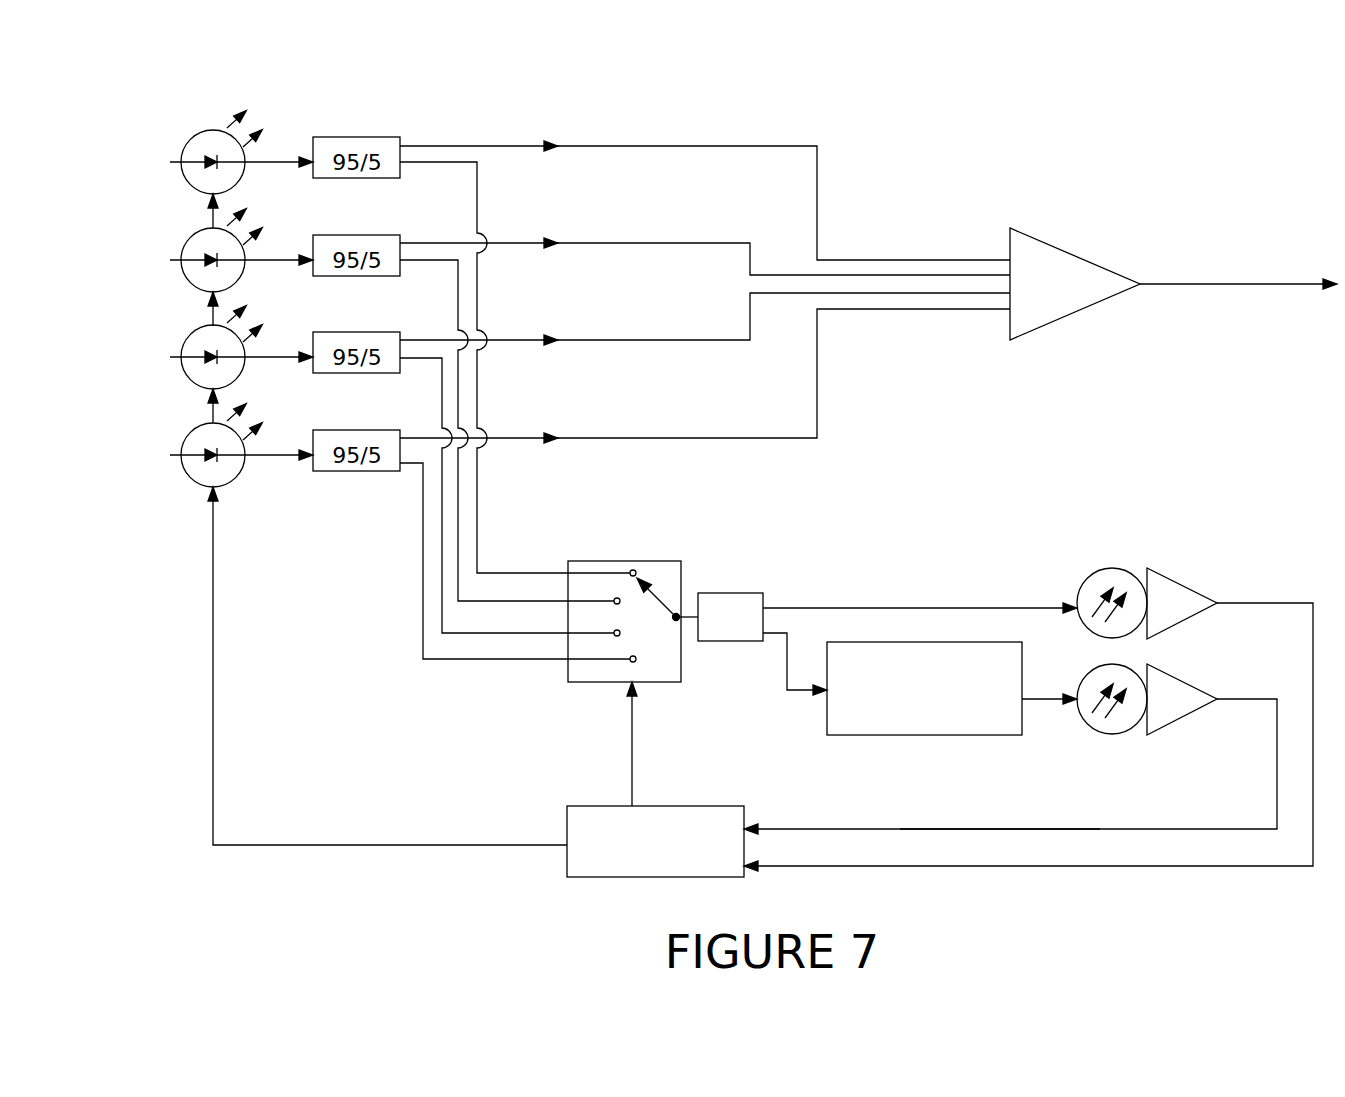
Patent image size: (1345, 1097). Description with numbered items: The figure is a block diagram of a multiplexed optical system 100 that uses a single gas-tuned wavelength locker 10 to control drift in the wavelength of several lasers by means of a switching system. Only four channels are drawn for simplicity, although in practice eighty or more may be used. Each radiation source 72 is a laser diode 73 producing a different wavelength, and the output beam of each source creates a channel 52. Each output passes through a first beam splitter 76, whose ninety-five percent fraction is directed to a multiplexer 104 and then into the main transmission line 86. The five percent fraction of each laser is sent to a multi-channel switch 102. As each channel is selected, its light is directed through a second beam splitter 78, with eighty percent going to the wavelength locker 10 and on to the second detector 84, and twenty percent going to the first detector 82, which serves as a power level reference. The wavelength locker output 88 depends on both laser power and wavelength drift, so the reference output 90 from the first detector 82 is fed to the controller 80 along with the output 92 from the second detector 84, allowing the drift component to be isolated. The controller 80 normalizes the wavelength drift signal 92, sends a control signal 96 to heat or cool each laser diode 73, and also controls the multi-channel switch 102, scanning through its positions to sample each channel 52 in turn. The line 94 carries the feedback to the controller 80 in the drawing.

The multiplexed optical system 100 is at (1087, 195).
The radiation source 72 is at (225, 336).
The laser diode 73 is at (205, 472).
The first beam splitter 76 is at (388, 465).
The channel 52 is at (950, 312).
The multiplexer 104 is at (1045, 318).
The main transmission line 86 is at (1150, 286).
The multi-channel switch 102 is at (648, 560).
The second beam splitter 78 is at (721, 593).
The gas-tuned wavelength locker 10 is at (924, 688).
The wavelength locker output 88 is at (1037, 699).
The first detector 82 is at (1167, 592).
The second detector 84 is at (1158, 717).
The reference output 90 is at (1283, 603).
The output of the second detector 92 is at (1265, 699).
The feedback signal 94 is at (890, 827).
The controller 80 is at (640, 868).
The control signal 96 is at (213, 780).